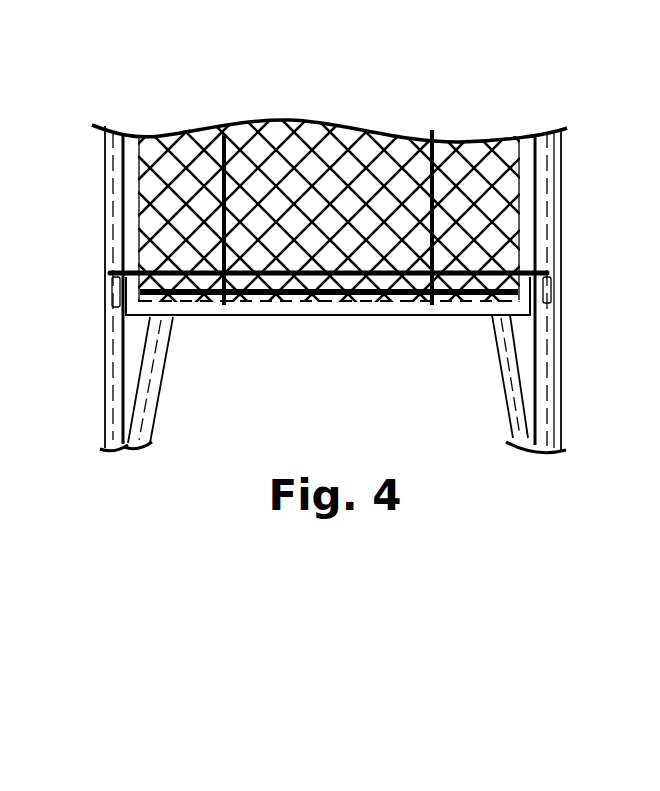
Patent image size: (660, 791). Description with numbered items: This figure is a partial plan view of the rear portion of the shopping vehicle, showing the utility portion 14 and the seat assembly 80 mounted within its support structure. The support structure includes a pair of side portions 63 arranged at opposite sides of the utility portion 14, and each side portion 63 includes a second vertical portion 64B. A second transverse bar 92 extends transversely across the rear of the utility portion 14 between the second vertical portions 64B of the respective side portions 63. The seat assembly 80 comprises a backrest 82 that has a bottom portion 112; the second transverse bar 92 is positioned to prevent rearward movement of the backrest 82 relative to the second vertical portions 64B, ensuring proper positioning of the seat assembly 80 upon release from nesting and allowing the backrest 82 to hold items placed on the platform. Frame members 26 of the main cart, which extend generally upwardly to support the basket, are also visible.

The seat assembly 80 is at (327, 114).
The utility portion 14 is at (400, 126).
The second vertical portion 64B is at (106, 215).
The side portion 63 is at (92, 264).
The bottom portion 112 is at (350, 316).
The backrest 82 is at (293, 316).
The second transverse bar 92 is at (470, 270).
The frame members 26 is at (152, 371).